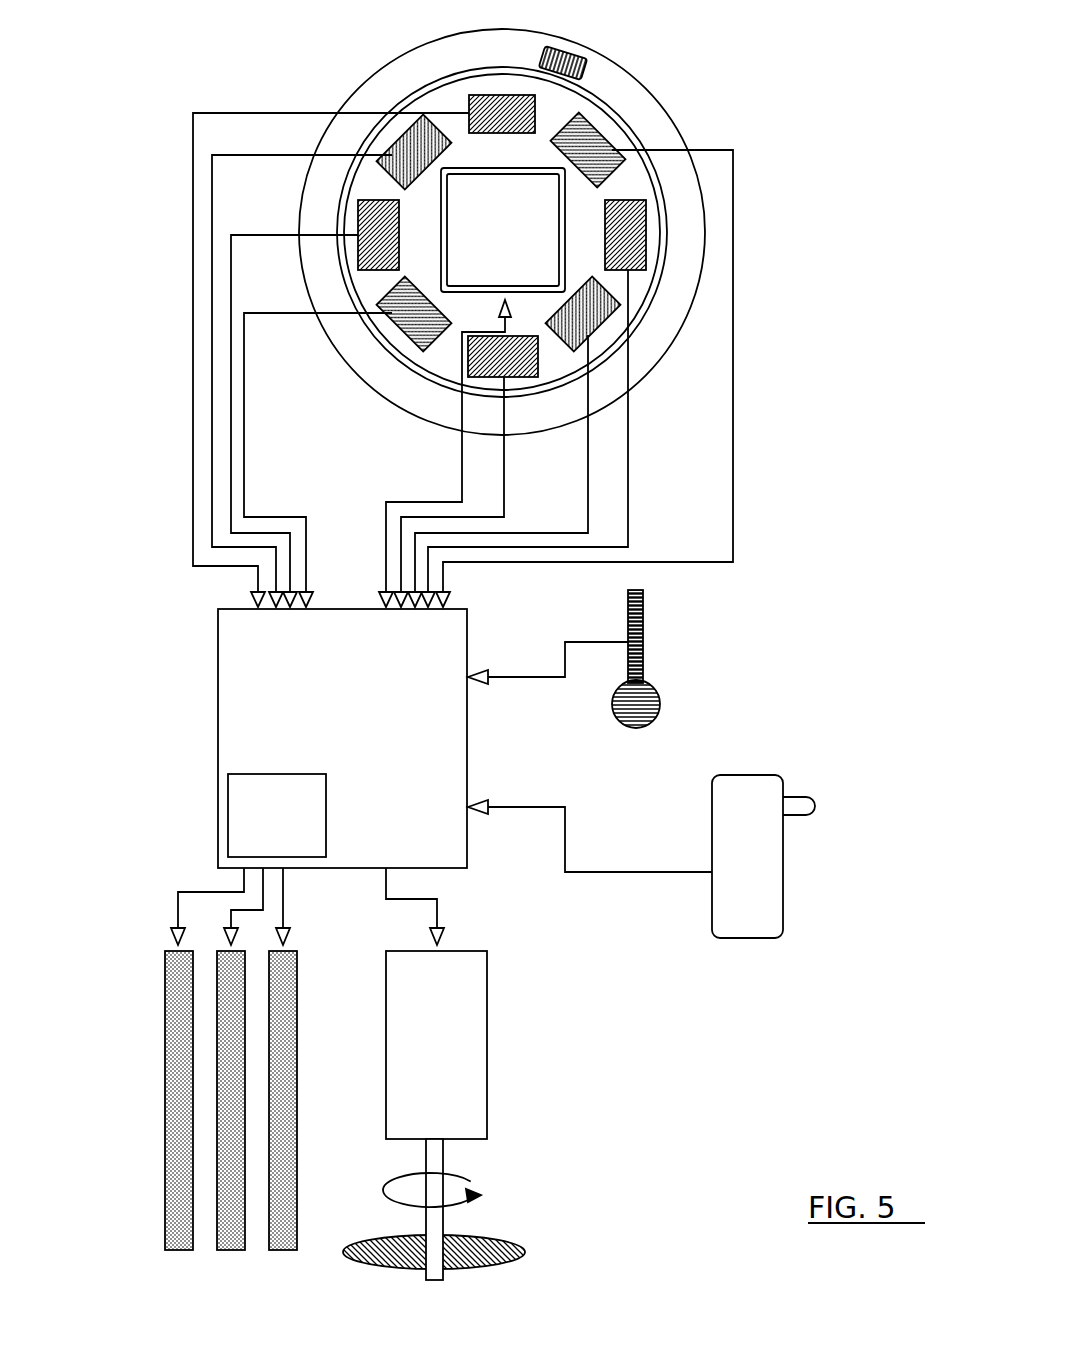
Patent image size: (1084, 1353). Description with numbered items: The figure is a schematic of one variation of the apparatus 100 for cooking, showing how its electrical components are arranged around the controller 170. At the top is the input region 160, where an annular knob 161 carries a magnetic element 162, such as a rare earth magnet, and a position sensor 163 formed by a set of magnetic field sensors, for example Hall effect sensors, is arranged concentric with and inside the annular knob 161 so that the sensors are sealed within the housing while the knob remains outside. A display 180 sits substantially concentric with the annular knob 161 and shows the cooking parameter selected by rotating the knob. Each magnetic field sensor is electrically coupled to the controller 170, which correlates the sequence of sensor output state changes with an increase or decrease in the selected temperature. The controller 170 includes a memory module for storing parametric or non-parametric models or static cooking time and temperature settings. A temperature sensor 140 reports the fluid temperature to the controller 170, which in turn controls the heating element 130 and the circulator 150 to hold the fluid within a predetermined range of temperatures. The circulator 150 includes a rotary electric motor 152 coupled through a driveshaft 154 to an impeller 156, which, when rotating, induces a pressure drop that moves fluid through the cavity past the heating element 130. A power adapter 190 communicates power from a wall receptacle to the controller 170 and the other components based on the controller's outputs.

The apparatus for cooking 100 is at (205, 58).
The heating element 130 is at (165, 1062).
The temperature sensor 140 is at (657, 698).
The circulator 150 is at (592, 1066).
The rotary electric motor 152 is at (473, 1022).
The driveshaft 154 is at (436, 1157).
The impeller 156 is at (470, 1247).
The input region 160 is at (770, 297).
The annular knob 161 is at (648, 118).
The magnetic element 162 is at (590, 68).
The position sensor 163 is at (625, 162).
The controller 170 is at (225, 705).
The display 180 is at (462, 193).
The power adapter 190 is at (753, 915).